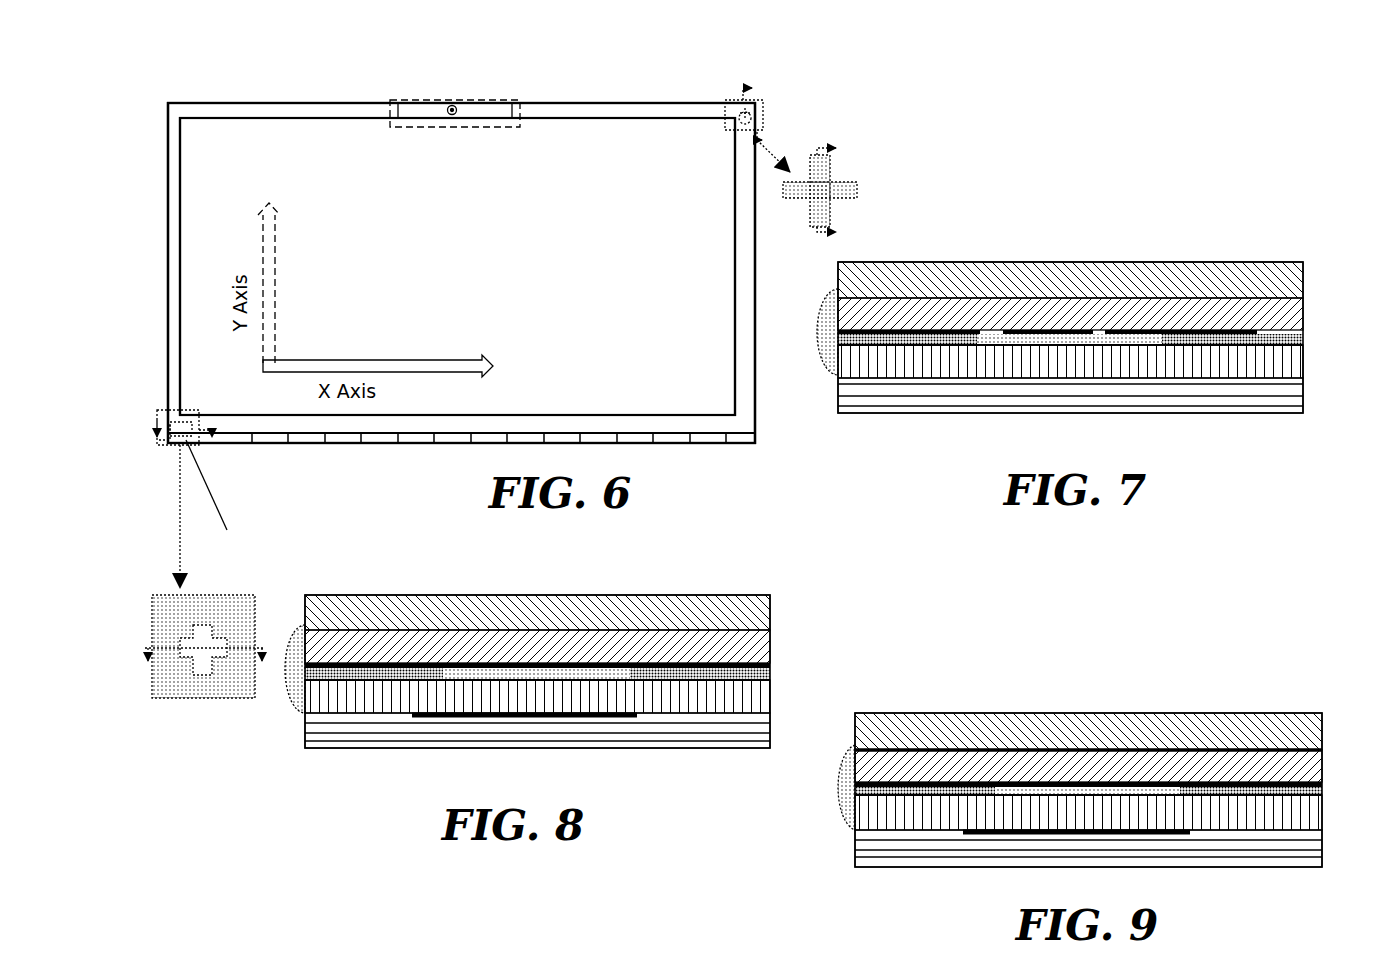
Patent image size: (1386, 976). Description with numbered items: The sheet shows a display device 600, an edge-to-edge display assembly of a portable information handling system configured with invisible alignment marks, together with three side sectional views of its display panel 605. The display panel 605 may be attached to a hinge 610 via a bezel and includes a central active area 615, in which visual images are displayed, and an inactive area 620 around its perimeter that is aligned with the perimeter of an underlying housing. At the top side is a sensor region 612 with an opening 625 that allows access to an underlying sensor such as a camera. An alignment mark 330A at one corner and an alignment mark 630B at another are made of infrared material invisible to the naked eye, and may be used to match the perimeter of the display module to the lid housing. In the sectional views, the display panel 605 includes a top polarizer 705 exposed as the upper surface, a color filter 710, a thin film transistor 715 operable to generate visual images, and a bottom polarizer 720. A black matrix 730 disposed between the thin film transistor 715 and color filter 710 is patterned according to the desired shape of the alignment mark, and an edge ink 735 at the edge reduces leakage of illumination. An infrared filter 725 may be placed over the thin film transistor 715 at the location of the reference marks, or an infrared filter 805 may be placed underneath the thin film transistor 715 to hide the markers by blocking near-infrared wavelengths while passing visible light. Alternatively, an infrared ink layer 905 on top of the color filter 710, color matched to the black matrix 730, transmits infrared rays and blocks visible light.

In FIG. 6, the display device 600 is at (252, 58).
In FIG. 6, the display panel 605 is at (318, 103).
In FIG. 6, the hinge 610 is at (253, 445).
In FIG. 6, the sensor region 612 is at (466, 129).
In FIG. 6, the active area 615 is at (457, 266).
In FIG. 6, the inactive area 620 is at (596, 116).
In FIG. 6, the opening 625 is at (452, 104).
In FIG. 6, the alignment mark 630B is at (803, 170).
In FIG. 6, the alignment mark 330A is at (191, 589).
In FIG. 7, the top polarizer 705 is at (1303, 284).
In FIG. 8, the top polarizer 705 is at (770, 611).
In FIG. 9, the top polarizer 705 is at (1322, 730).
In FIG. 7, the color filter 710 is at (1303, 330).
In FIG. 8, the color filter 710 is at (770, 655).
In FIG. 9, the color filter 710 is at (1322, 774).
In FIG. 7, the thin film transistor 715 is at (1303, 364).
In FIG. 8, the thin film transistor 715 is at (770, 706).
In FIG. 9, the thin film transistor 715 is at (1322, 824).
In FIG. 7, the bottom polarizer 720 is at (1303, 402).
In FIG. 8, the bottom polarizer 720 is at (770, 742).
In FIG. 9, the bottom polarizer 720 is at (1322, 860).
In FIG. 7, the infrared filter 725 is at (1165, 350).
In FIG. 7, the black matrix 730 is at (1000, 342).
In FIG. 8, the black matrix 730 is at (477, 684).
In FIG. 9, the black matrix 730 is at (1028, 800).
In FIG. 7, the edge ink 735 is at (823, 375).
In FIG. 8, the edge ink 735 is at (296, 713).
In FIG. 9, the edge ink 735 is at (847, 830).
In FIG. 8, the infrared filter 805 is at (590, 722).
In FIG. 9, the infrared filter 805 is at (1140, 840).
In FIG. 9, the infrared ink layer 905 is at (1085, 740).